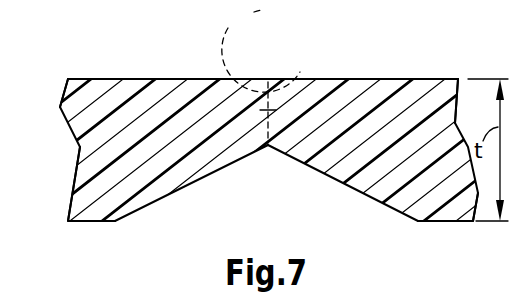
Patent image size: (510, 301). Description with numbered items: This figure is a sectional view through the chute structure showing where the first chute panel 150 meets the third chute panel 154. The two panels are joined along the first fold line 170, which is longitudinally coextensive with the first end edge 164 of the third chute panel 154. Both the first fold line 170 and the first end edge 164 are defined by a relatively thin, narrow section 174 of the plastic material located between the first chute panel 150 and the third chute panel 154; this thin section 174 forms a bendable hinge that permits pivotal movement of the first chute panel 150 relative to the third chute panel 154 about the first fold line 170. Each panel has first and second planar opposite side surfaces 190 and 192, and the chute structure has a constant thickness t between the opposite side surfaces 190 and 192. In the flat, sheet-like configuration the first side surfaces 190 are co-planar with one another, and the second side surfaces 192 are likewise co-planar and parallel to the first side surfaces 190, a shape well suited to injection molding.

The first chute panel 150 is at (102, 62).
The third chute panel 154 is at (421, 62).
The first end edge 164 is at (258, 48).
The first fold line 170 is at (281, 109).
The thin, narrow section 174 is at (243, 115).
The first planar side surface 190 is at (80, 79).
The second planar side surface 192 is at (83, 221).